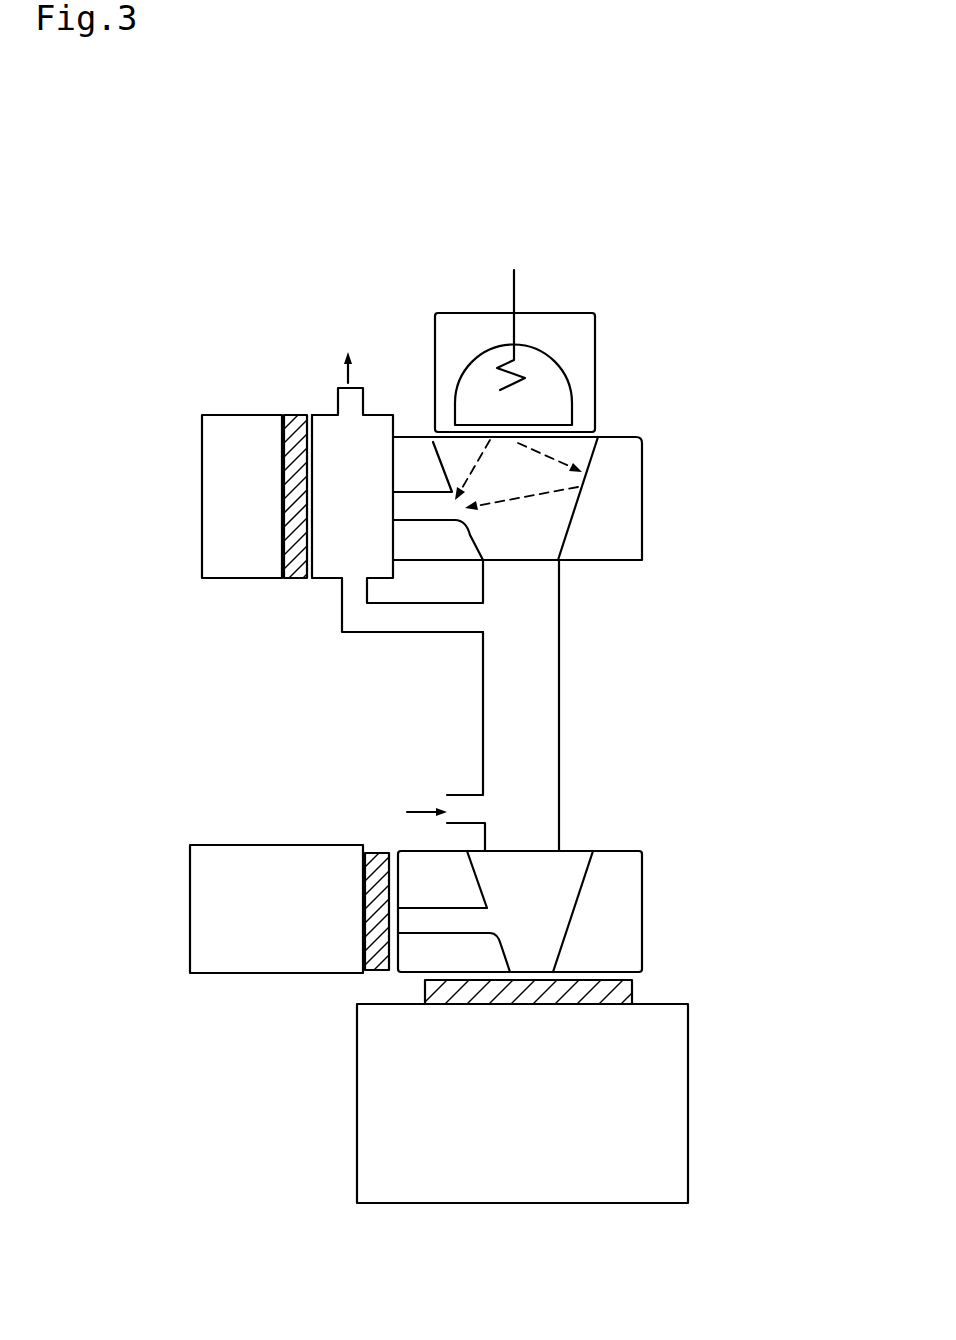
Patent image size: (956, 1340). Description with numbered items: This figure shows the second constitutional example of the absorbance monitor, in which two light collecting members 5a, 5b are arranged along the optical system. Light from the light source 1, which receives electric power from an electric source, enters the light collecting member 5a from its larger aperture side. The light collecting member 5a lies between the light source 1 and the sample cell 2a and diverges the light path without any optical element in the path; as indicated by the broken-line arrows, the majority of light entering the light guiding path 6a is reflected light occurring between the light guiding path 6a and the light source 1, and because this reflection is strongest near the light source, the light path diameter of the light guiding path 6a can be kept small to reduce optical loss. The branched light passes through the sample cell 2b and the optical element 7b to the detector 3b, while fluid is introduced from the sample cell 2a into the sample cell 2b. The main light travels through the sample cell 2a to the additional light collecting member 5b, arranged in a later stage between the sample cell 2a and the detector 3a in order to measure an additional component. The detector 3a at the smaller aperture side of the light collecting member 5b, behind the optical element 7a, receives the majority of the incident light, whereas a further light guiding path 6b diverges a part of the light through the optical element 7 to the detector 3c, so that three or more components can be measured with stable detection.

The light source 1 is at (595, 348).
The sample cell 2a is at (559, 700).
The sample cell 2b is at (330, 580).
The detector 3a is at (553, 1203).
The detector 3b is at (203, 485).
The detector 3c is at (190, 930).
The light collecting member 5a is at (642, 492).
The light collecting member 5b is at (642, 898).
The light guiding path 6a is at (433, 513).
The light guiding path 6b is at (428, 935).
The optical element 7 is at (382, 852).
The optical element 7a is at (635, 987).
The optical element 7b is at (295, 413).